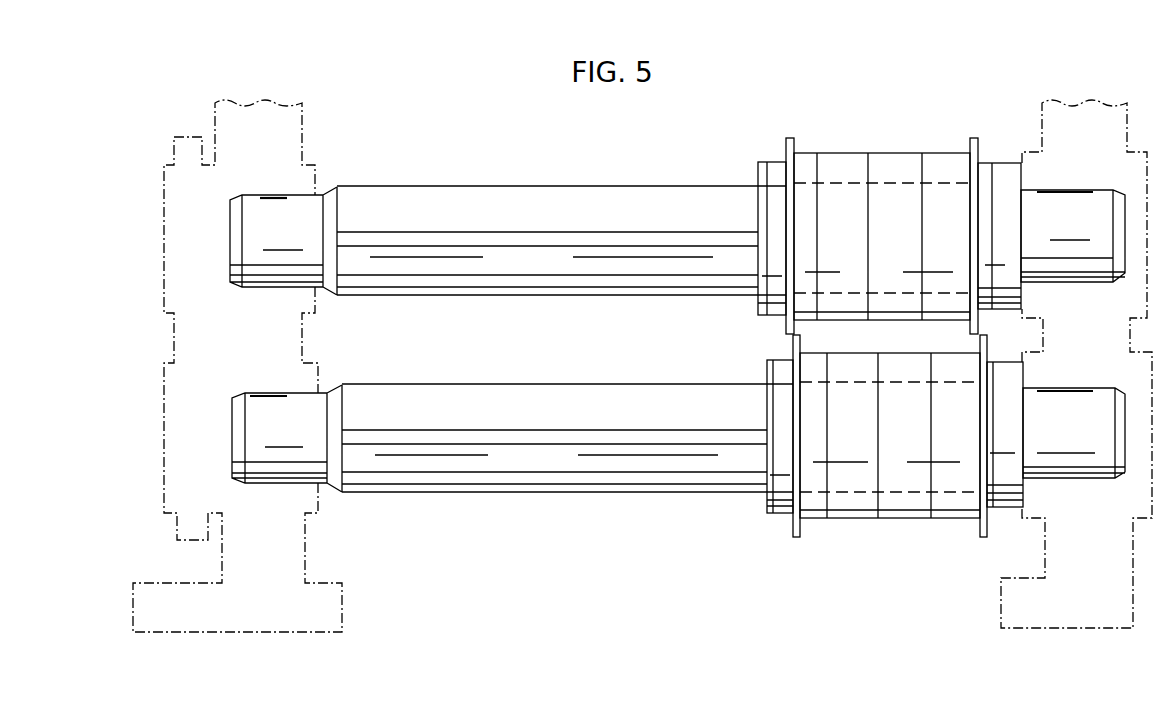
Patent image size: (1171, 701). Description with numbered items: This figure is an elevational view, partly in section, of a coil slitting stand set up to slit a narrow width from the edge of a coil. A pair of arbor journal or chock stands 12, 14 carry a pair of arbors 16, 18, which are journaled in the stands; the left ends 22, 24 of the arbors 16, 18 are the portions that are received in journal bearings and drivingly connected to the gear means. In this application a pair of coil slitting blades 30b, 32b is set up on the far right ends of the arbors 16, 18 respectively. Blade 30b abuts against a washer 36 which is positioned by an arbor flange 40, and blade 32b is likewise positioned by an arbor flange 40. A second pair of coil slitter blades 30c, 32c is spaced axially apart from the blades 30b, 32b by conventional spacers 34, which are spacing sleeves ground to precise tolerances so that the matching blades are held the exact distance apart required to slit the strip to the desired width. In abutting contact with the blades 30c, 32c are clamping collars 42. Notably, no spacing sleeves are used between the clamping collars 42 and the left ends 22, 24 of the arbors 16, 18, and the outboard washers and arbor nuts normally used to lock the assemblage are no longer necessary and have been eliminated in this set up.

The arbor journal stand 12 is at (264, 113).
The arbor journal stand 14 is at (1088, 113).
The arbor 16 is at (496, 280).
The arbor 18 is at (497, 480).
The arbor end 22 is at (275, 276).
The arbor end 24 is at (269, 469).
The coil slitting blade 30b is at (970, 147).
The coil slitting blade 30c is at (793, 147).
The coil slitting blade 32b is at (978, 530).
The coil slitting blade 32c is at (800, 532).
The spacing sleeve 34 is at (933, 158).
The washer 36 is at (983, 165).
The arbor flange 40 is at (1012, 243).
The clamping collar 42 is at (773, 160).